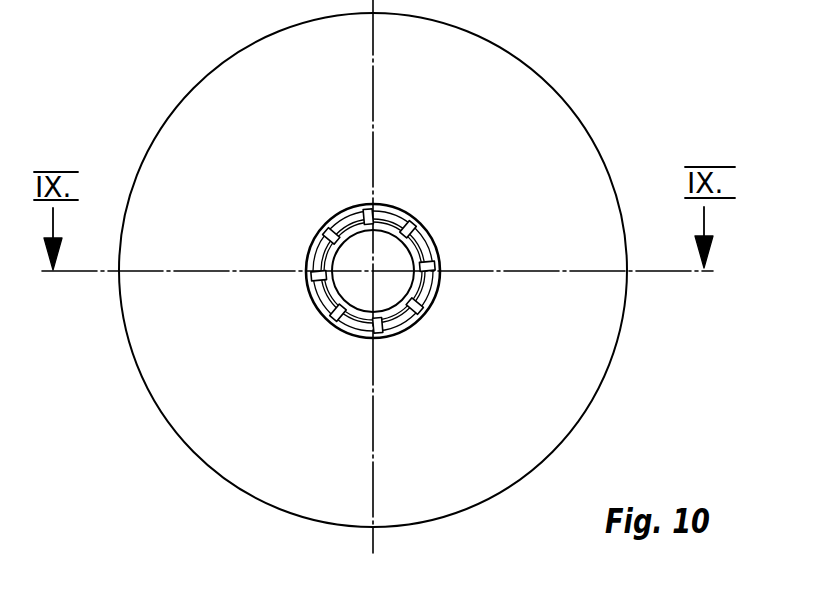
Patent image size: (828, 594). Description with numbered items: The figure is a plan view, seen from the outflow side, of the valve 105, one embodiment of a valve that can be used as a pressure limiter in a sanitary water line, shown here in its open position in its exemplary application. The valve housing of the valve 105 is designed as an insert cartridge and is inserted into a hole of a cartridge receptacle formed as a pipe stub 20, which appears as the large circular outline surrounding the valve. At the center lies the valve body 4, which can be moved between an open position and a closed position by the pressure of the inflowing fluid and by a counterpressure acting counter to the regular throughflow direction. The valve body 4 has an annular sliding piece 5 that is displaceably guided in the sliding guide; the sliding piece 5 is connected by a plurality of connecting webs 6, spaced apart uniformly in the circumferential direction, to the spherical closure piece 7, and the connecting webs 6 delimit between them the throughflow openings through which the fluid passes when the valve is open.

The valve 105 is at (508, 212).
The pipe stub 20 is at (563, 402).
The sliding piece 5 is at (423, 236).
The connecting webs 6 is at (405, 220).
The closure piece 7 is at (401, 265).
The valve body 4 is at (342, 215).